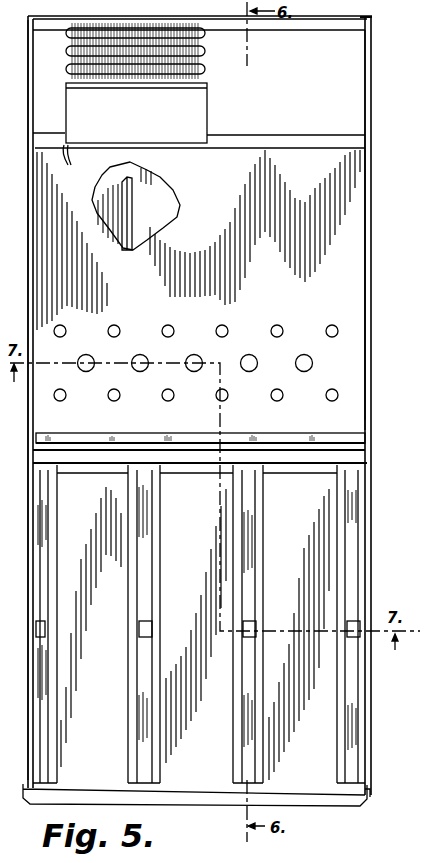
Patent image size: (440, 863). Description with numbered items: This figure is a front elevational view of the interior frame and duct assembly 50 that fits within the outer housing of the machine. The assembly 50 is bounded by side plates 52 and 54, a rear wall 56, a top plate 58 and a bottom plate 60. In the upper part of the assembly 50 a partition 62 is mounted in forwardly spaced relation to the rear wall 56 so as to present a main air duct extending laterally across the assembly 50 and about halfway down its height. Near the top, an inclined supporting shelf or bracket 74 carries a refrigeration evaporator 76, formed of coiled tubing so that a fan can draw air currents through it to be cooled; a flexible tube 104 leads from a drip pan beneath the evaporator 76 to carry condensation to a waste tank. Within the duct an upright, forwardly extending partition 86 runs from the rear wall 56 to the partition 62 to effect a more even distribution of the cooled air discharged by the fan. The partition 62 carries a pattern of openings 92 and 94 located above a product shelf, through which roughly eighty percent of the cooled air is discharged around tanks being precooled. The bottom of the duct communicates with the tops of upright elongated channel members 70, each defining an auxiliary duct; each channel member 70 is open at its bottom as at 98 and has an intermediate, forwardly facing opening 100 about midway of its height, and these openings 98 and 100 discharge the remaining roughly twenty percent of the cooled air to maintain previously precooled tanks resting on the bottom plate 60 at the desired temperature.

The interior frame and duct assembly 50 is at (374, 245).
The side plate 52 is at (29, 176).
The side plate 54 is at (372, 189).
The rear wall 56 is at (168, 222).
The top plate 58 is at (366, 19).
The bottom plate 60 is at (318, 800).
The partition 62 is at (357, 278).
The upright elongated channel member 70 is at (263, 573).
The inclined supporting shelf or bracket 74 is at (208, 86).
The refrigeration evaporator 76 is at (205, 51).
The upright forwardly extending partition 86 is at (133, 196).
The opening 92 is at (86, 355).
The opening 94 is at (117, 327).
The open bottom of channel 98 is at (360, 441).
The intermediate forwardly facing opening 100 is at (153, 630).
The flexible tube 104 is at (70, 155).